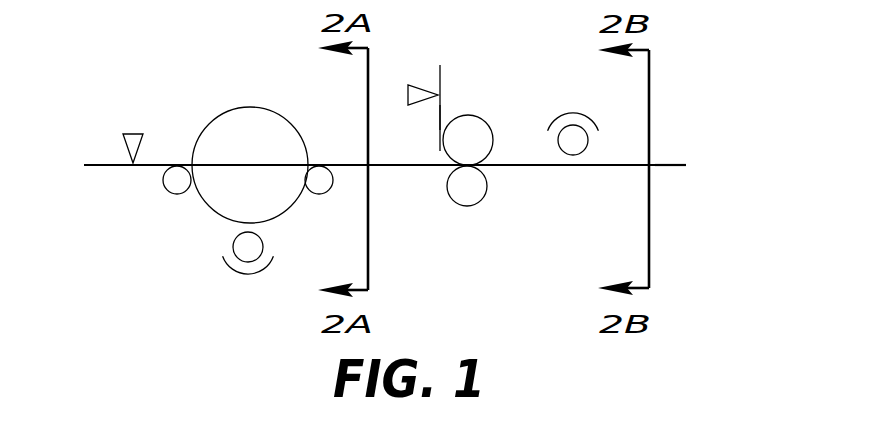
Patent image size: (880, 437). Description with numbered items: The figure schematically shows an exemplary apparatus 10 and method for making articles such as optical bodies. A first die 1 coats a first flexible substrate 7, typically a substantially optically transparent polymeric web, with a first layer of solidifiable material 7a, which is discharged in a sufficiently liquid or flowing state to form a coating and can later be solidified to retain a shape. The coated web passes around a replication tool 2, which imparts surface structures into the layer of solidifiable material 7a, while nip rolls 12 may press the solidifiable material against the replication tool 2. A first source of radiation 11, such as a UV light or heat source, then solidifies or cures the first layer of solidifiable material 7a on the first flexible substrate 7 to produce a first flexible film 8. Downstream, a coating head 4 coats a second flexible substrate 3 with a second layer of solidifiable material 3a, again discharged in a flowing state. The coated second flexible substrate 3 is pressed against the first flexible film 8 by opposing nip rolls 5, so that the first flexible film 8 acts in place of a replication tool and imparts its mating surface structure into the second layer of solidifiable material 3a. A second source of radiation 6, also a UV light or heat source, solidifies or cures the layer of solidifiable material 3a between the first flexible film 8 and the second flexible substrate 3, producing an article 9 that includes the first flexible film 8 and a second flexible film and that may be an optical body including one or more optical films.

The first die 1 is at (110, 125).
The replication tool 2 is at (251, 100).
The second flexible substrate 3 is at (444, 67).
The second layer of solidifiable material 3a is at (437, 115).
The coating head 4 is at (416, 78).
The opposing nip rolls 5 is at (464, 214).
The second source of radiation 6 is at (570, 106).
The first flexible substrate 7 is at (113, 167).
The first layer of solidifiable material 7a is at (152, 163).
The first flexible film 8 is at (400, 168).
The article 9 is at (663, 167).
The apparatus 10 is at (694, 80).
The first source of radiation 11 is at (234, 282).
The nip rolls 12 is at (178, 190).